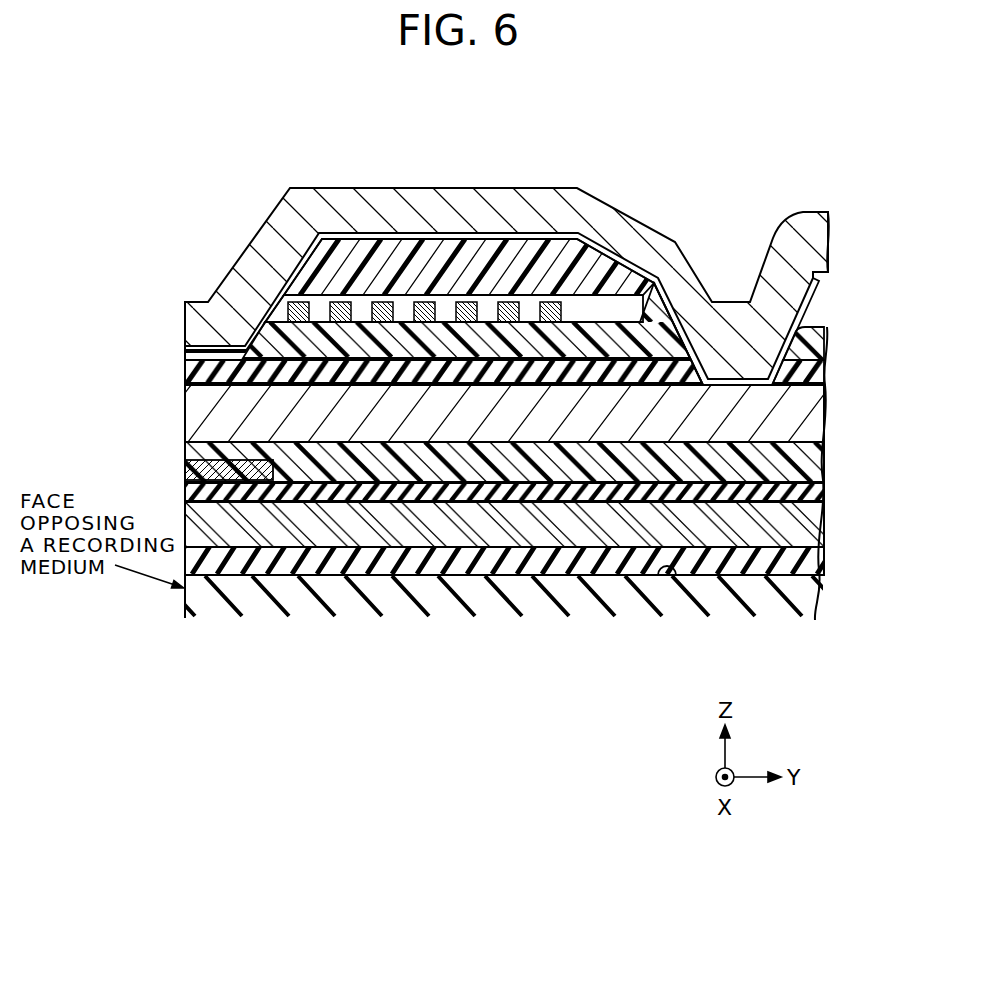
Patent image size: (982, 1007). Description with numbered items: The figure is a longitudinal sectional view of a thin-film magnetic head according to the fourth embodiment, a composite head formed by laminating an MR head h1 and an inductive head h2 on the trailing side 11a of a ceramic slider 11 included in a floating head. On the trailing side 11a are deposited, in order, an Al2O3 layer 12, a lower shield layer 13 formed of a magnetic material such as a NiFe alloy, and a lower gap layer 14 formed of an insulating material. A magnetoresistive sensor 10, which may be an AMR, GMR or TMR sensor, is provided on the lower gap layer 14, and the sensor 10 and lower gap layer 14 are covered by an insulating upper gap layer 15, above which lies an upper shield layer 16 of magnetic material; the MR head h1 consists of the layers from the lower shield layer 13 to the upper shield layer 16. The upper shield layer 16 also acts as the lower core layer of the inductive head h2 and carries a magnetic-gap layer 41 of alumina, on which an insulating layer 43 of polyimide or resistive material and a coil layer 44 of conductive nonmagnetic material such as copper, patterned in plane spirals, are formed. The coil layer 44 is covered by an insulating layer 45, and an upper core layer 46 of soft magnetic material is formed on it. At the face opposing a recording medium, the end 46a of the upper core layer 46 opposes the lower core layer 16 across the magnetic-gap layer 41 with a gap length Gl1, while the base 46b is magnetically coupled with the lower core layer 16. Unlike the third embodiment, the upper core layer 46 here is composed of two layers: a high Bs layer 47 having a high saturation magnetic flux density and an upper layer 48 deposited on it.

The magnetoresistive sensor 10 is at (207, 468).
The ceramic slider 11 is at (727, 597).
The trailing side 11a is at (673, 570).
The Al2O3 layer 12 is at (593, 565).
The lower shield layer 13 is at (512, 530).
The lower gap layer 14 is at (427, 493).
The upper gap layer 15 is at (355, 458).
The upper shield layer 16 is at (207, 412).
The magnetic-gap layer 41 is at (203, 362).
The insulating layer 43 is at (647, 278).
The coil layer 44 is at (423, 288).
The insulating layer 45 is at (495, 257).
The upper core layer 46 is at (503, 248).
The end of the upper core layer 46a is at (203, 332).
The base of the upper core layer 46b is at (735, 347).
The high Bs layer 47 is at (577, 236).
The upper layer 48 is at (598, 225).
The gap length Gl1 is at (185, 380).
The MR head h1 is at (843, 391).
The inductive head h2 is at (843, 213).